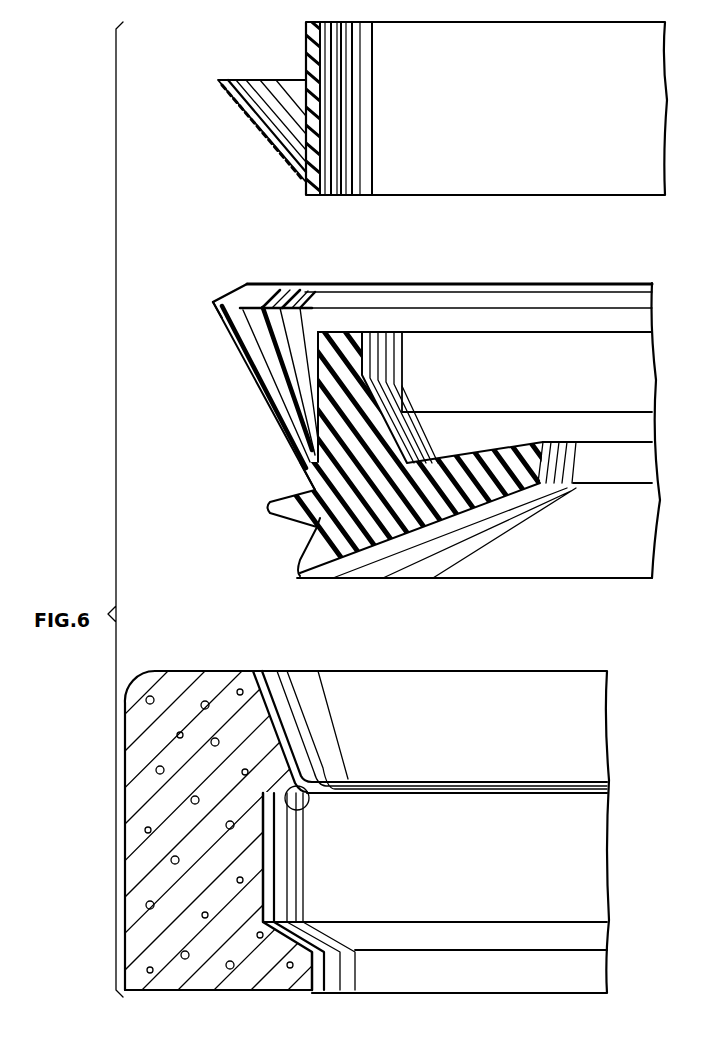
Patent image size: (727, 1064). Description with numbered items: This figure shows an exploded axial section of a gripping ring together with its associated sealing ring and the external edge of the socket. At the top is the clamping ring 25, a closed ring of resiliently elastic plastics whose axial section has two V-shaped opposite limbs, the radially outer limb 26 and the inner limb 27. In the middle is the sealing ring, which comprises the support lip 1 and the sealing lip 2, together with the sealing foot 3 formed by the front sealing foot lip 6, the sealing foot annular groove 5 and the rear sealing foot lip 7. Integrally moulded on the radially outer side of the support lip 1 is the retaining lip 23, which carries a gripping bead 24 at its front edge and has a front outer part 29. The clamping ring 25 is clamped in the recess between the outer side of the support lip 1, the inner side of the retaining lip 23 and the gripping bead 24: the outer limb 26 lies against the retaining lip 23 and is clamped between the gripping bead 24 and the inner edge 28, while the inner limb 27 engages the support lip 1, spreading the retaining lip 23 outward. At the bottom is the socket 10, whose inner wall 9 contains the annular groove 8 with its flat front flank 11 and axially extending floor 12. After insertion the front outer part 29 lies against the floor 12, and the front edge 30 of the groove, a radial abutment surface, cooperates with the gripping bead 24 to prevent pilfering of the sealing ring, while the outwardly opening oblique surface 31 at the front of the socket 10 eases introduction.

The clamping ring 25 is at (242, 58).
The radially outer limb 26 is at (250, 118).
The inner limb 27 is at (489, 95).
The gripping bead 24 is at (238, 294).
The front outer part of the holding lip 29 is at (222, 308).
The retaining lip 23 is at (268, 392).
The inner edge 28 is at (302, 454).
The sealing foot 3 is at (162, 584).
The front sealing foot lip 6 is at (266, 505).
The sealing foot annular groove 5 is at (316, 527).
The rear sealing foot lip 7 is at (298, 574).
The support lip 1 is at (590, 390).
The sealing lip 2 is at (606, 540).
The socket 10 is at (212, 700).
The front edge of the annular groove 30 is at (330, 780).
The outwardly opening oblique surface 31 is at (510, 737).
The floor of the annular groove 12 is at (522, 863).
The front flank 11 is at (482, 945).
The inner wall 9 is at (514, 980).
The annular groove 8 is at (624, 778).